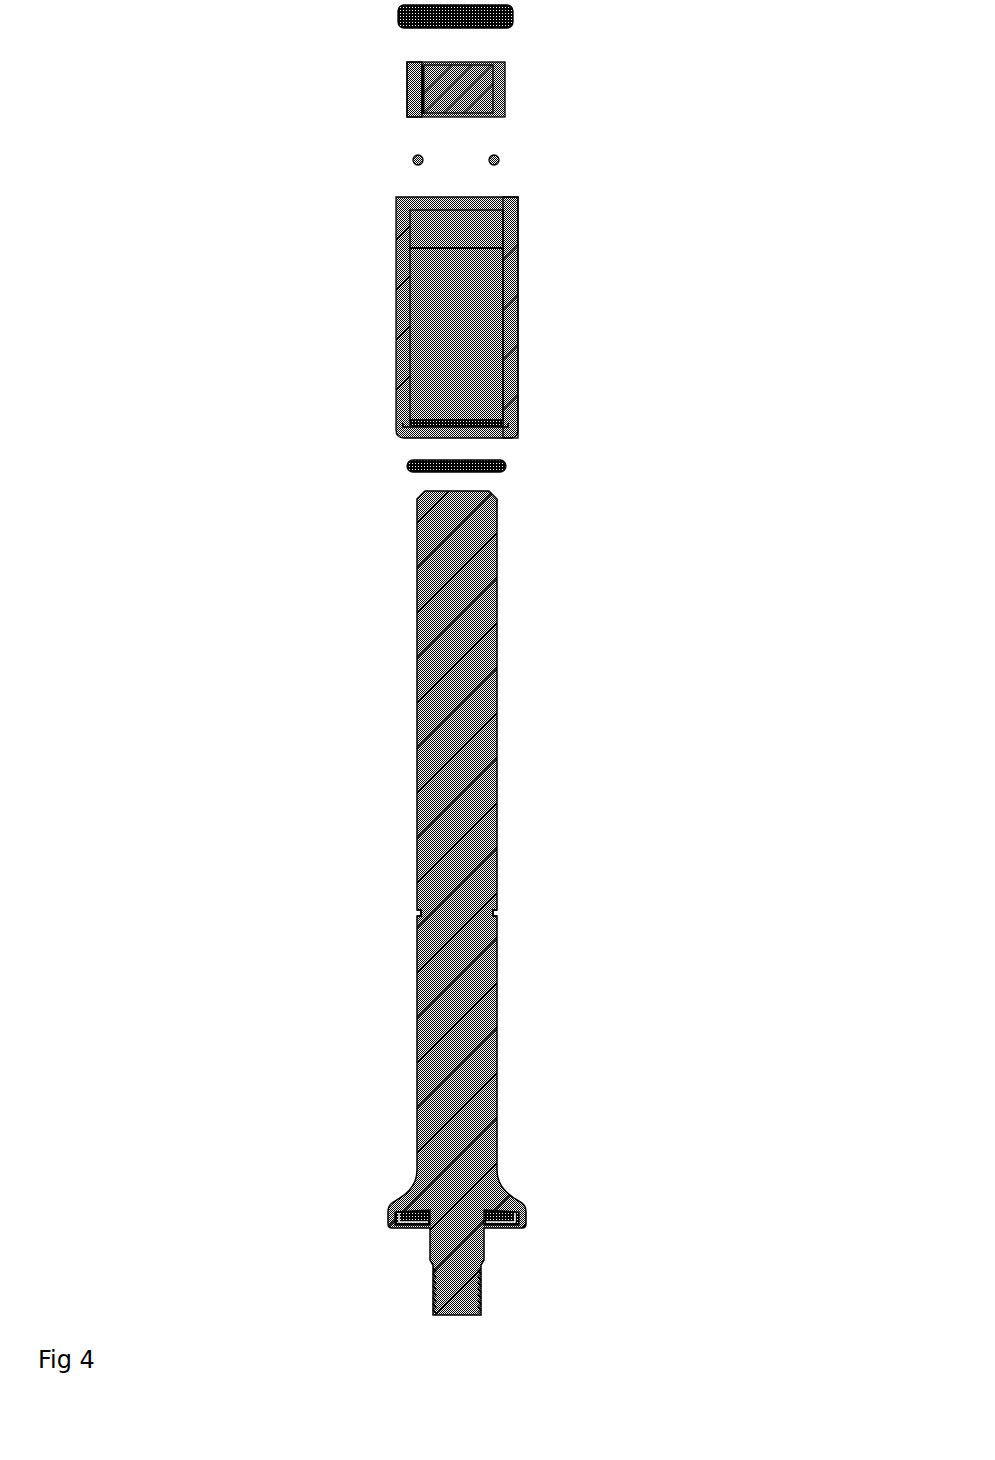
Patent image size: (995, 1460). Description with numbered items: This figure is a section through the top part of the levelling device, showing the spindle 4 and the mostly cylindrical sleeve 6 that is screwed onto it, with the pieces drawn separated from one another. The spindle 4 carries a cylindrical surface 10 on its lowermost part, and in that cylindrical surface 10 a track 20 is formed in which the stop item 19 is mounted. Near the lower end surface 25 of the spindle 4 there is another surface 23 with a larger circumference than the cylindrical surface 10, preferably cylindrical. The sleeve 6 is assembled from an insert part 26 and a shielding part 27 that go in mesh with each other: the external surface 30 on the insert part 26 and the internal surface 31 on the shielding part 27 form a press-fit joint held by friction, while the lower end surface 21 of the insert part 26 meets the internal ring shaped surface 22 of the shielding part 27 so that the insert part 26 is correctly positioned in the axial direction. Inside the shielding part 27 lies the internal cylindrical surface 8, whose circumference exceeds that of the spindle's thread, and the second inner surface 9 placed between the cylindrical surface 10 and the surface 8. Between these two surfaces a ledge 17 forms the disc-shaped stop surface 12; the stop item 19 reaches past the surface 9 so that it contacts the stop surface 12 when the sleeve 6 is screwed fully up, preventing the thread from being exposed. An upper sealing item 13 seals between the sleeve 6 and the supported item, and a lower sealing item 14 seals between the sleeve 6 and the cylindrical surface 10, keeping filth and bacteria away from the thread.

The spindle 4 is at (449, 885).
The sleeve 6 is at (404, 372).
The internal cylindrical surface 8 is at (415, 362).
The second inner surface 9 is at (421, 421).
The cylindrical surface 10 is at (497, 1065).
The stop surface 12 is at (452, 418).
The upper sealing item 13 is at (397, 28).
The lower sealing item 14 is at (507, 466).
The ledge 17 is at (404, 428).
The stop item 19 is at (508, 157).
The track 20 is at (496, 913).
The lower end surface 21 is at (413, 117).
The internal ring shaped surface 22 is at (421, 246).
The surface 23 is at (384, 1217).
The lower end surface 25 is at (511, 1233).
The insert part 26 is at (500, 84).
The shielding part 27 is at (514, 285).
The external surface 30 is at (466, 112).
The internal surface 31 is at (413, 230).